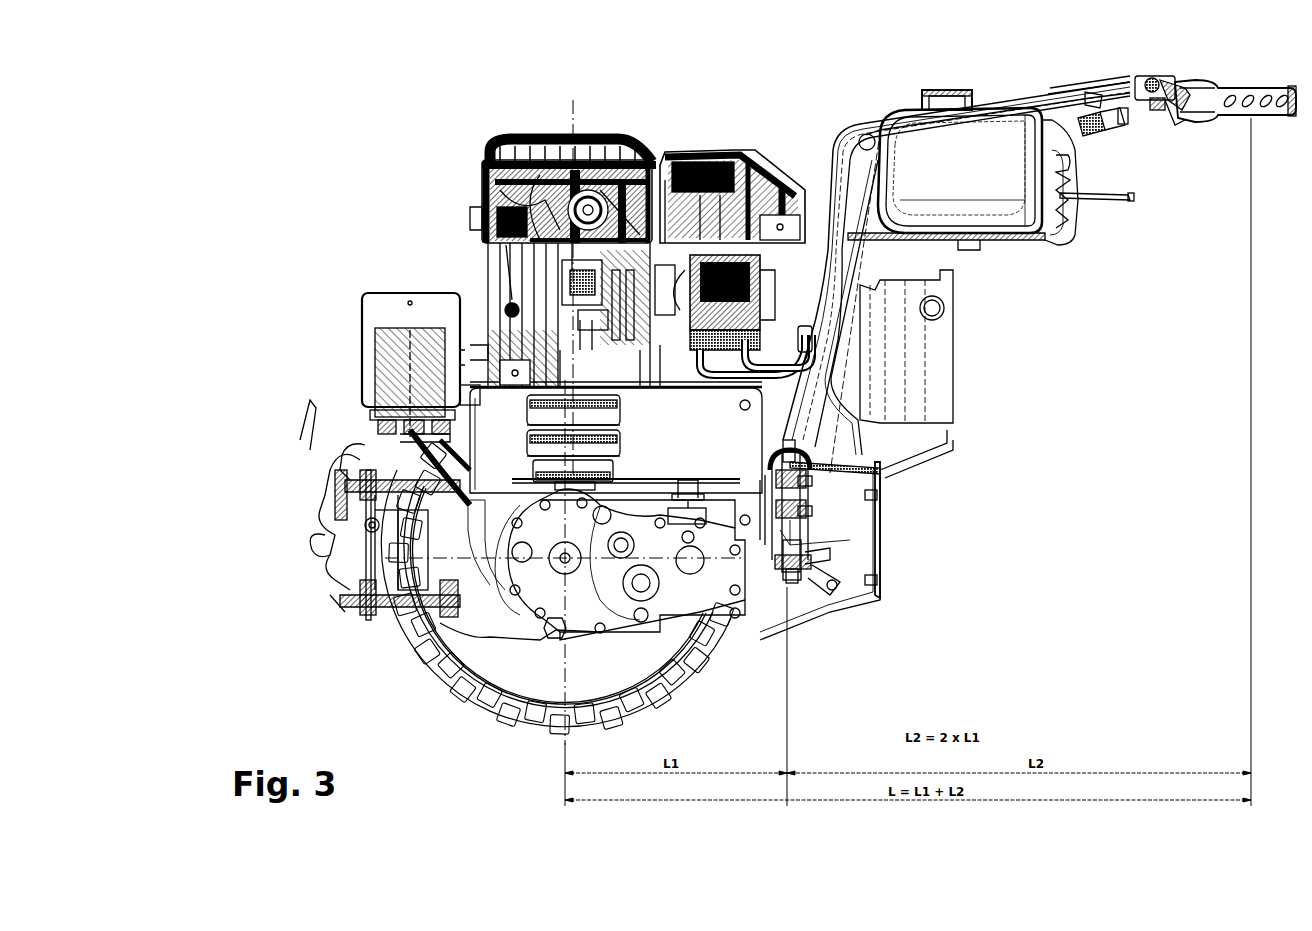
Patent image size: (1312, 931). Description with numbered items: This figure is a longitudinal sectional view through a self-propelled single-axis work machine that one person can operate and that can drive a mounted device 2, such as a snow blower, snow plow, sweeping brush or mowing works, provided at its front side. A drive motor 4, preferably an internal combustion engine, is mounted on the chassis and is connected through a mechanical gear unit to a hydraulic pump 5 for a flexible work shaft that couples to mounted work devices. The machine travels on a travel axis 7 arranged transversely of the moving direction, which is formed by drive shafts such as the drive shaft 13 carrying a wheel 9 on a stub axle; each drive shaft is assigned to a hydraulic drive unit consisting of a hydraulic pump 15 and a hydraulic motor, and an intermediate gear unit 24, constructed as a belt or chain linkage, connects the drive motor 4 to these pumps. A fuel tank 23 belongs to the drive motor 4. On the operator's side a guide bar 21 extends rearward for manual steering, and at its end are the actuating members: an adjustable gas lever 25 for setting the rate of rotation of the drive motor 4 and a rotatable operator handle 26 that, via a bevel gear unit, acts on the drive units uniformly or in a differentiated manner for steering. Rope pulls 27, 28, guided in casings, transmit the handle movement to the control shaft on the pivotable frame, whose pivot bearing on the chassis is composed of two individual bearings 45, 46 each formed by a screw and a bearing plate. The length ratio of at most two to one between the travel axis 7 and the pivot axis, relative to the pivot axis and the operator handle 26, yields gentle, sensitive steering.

The mounted device 2 is at (318, 588).
The drive motor 4 is at (706, 142).
The hydraulic pump 5 is at (388, 352).
The travel axis 7 is at (552, 585).
The wheel 9 is at (462, 664).
The drive shaft 13 is at (600, 505).
The hydraulic pump 15 is at (695, 510).
The guide bar 21 is at (1087, 95).
The fuel tank 23 is at (1004, 245).
The intermediate gear unit 24 is at (637, 464).
The gas lever 25 is at (1160, 117).
The operator handle 26 is at (1206, 90).
The rope pull 27 is at (843, 133).
The rope pull 28 is at (836, 153).
The individual bearing 45 is at (808, 458).
The individual bearing 46 is at (796, 578).